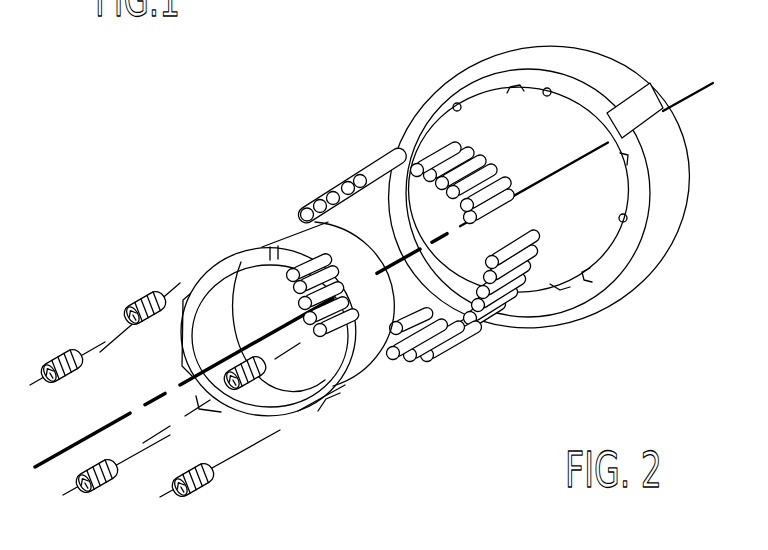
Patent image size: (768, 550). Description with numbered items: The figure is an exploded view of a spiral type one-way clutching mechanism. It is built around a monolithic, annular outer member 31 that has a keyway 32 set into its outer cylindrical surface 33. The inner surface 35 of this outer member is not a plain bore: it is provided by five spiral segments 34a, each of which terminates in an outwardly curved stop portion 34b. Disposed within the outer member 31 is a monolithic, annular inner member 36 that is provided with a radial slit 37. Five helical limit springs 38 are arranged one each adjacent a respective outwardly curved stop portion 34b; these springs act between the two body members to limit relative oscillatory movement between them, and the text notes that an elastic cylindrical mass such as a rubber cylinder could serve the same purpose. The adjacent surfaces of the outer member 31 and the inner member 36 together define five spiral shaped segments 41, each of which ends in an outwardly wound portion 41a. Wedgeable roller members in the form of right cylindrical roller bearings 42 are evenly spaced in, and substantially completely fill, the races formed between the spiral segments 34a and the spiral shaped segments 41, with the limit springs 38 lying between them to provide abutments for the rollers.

The outer member 31 is at (610, 267).
The keyway 32 is at (640, 117).
The outer cylindrical surface 33 is at (596, 67).
The spiral segments 34a is at (540, 92).
The outwardly curved stop portion 34b is at (513, 86).
The inner surface 35 is at (560, 290).
The inner member 36 is at (360, 363).
The radial slit 37 is at (270, 245).
The helical limit springs 38 is at (213, 475).
The spiral shaped segments 41 is at (352, 382).
The outwardly wound portion 41a is at (327, 403).
The roller bearings 42 is at (490, 325).